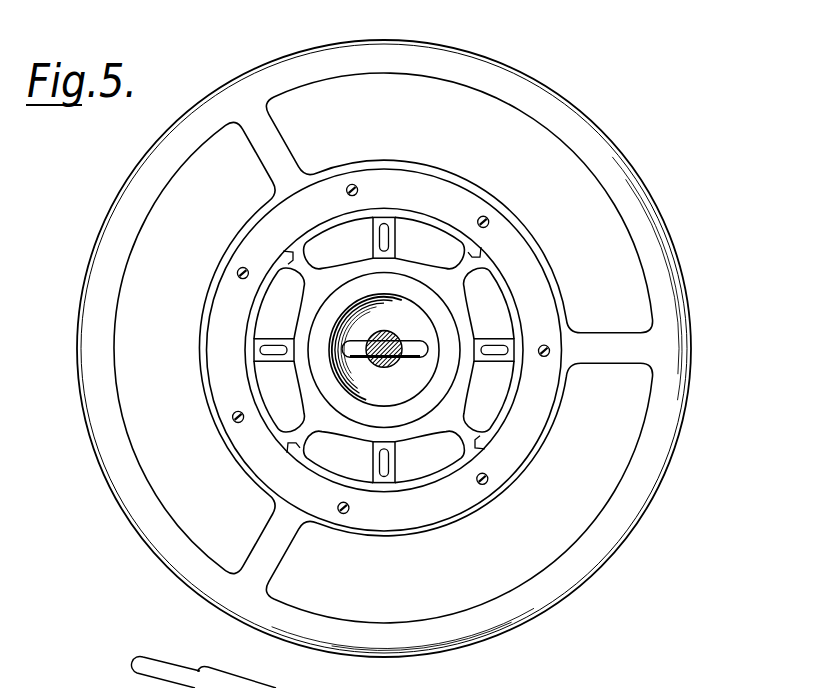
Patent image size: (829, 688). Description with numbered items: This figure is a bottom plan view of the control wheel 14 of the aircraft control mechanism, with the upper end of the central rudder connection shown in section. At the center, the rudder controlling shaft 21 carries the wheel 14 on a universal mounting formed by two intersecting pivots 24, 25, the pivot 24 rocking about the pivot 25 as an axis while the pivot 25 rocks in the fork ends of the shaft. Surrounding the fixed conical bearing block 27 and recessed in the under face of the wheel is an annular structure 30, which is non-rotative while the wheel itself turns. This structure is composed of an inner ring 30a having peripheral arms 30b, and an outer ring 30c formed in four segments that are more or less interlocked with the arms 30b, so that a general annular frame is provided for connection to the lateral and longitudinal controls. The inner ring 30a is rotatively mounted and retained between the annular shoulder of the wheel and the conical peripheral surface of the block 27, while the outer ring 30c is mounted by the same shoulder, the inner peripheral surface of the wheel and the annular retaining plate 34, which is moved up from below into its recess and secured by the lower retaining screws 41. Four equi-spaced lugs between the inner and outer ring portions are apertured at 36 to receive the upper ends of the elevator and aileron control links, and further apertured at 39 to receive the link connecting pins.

The wheel 14 is at (597, 160).
The rudder controlling shaft 21 is at (396, 340).
The pivot 24 is at (347, 353).
The pivot 25 is at (382, 365).
The fixed block 27 is at (384, 349).
The annular structure 30 is at (429, 456).
The inner ring 30a is at (462, 386).
The peripheral arms 30b is at (310, 268).
The outer ring 30c is at (505, 292).
The annular retaining plate 34 is at (384, 350).
The apertures 36 is at (278, 342).
The apertures 39 is at (272, 358).
The lower retaining screws 41 is at (546, 347).